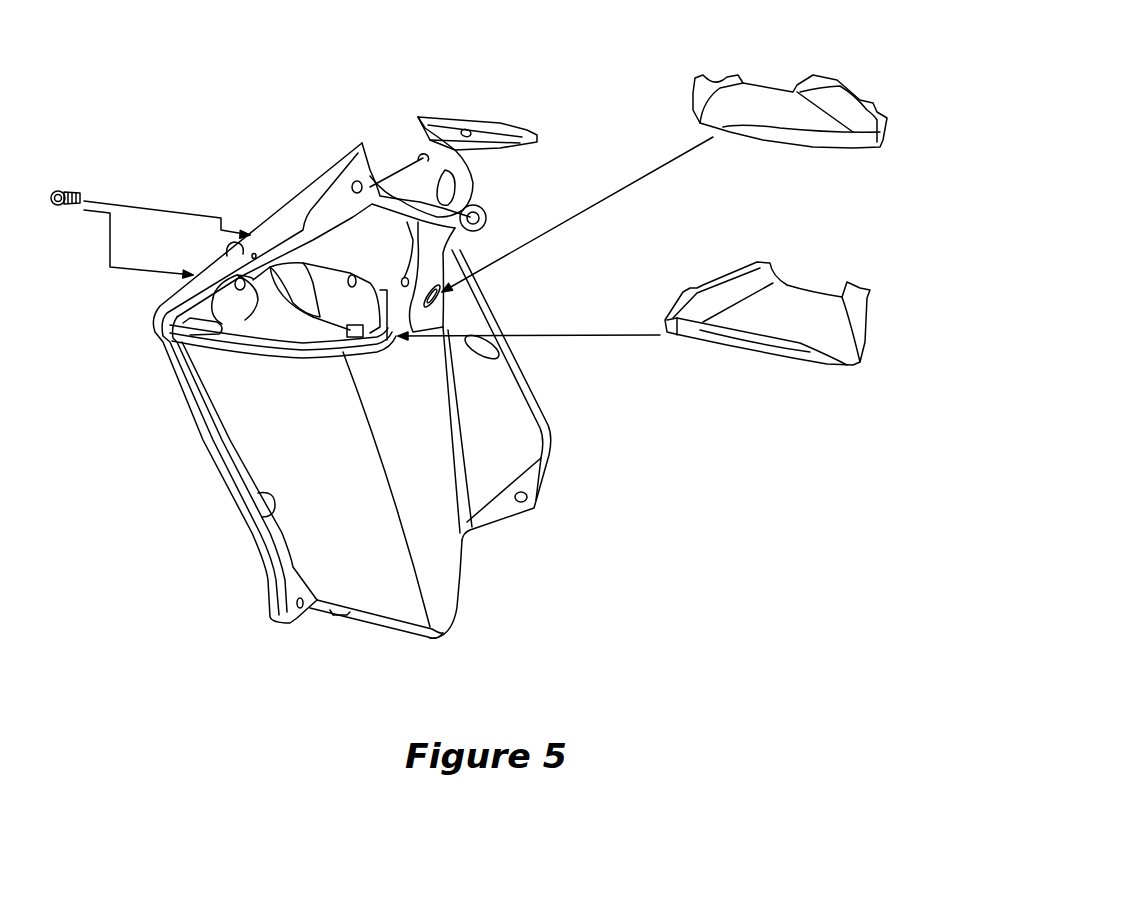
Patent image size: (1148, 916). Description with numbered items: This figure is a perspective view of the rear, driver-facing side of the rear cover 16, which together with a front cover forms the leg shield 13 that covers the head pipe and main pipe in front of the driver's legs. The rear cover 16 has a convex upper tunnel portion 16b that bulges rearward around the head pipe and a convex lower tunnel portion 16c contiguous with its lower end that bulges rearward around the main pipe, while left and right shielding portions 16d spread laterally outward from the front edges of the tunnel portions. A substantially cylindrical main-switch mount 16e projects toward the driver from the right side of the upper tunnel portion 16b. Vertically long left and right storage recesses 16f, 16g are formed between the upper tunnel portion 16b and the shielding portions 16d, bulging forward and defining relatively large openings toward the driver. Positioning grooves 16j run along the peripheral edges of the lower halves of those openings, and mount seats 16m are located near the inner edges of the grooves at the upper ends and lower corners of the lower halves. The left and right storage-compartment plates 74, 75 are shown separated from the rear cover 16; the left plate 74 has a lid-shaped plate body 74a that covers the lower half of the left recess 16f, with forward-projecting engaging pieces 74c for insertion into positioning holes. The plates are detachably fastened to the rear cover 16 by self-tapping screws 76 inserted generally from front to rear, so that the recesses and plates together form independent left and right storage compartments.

The leg shield 13 is at (459, 85).
The rear cover 16 is at (314, 192).
The upper tunnel portion 16b is at (475, 200).
The lower tunnel portion 16c is at (460, 497).
The shielding portion 16d is at (507, 403).
The main-switch mount 16e is at (488, 225).
The left storage recess 16f is at (257, 363).
The right storage recess 16g is at (440, 297).
The positioning groove 16j is at (294, 355).
The mount seat 16m is at (360, 340).
The left storage-compartment plate 74 is at (877, 333).
The plate body 74a is at (777, 333).
The engaging piece 74c is at (697, 288).
The right storage-compartment plate 75 is at (889, 116).
The self-tapping screw 76 is at (58, 191).